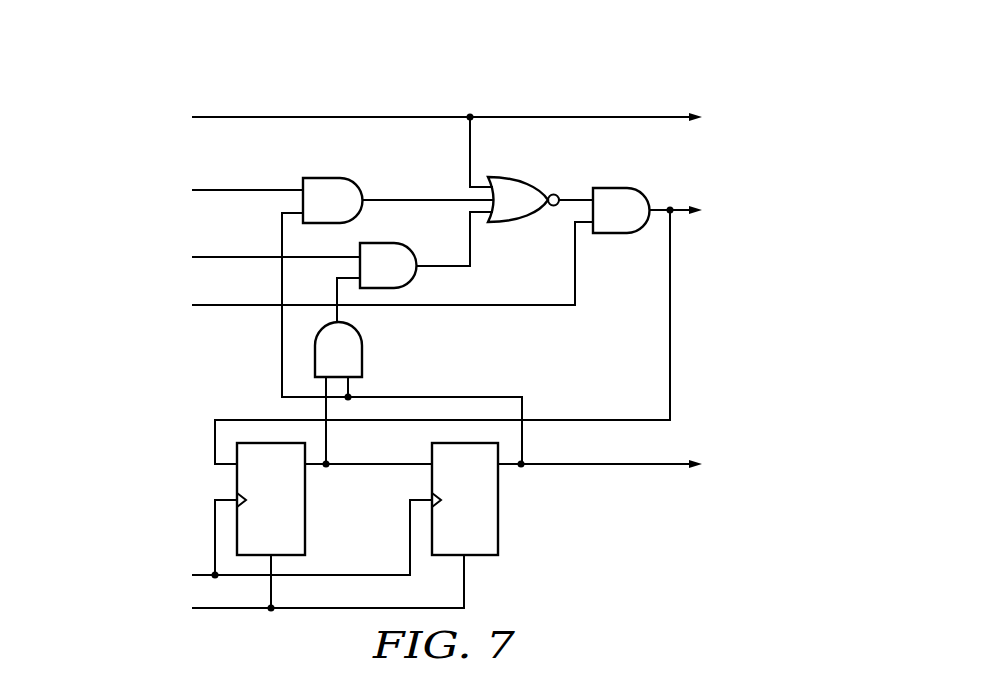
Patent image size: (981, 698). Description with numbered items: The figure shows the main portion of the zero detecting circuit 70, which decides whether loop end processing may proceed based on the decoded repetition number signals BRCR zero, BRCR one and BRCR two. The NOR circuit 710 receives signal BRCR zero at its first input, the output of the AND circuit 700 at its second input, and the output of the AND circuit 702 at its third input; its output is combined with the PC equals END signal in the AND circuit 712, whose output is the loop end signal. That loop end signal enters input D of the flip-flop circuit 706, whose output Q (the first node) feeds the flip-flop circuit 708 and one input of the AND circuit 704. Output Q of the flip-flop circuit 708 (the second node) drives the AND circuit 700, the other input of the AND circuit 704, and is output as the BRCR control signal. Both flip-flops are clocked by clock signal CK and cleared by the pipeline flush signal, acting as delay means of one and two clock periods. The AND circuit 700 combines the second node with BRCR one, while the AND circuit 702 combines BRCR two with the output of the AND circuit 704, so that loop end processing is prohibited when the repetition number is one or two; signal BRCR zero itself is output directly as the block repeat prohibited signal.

The zero detecting circuit 70 is at (617, 78).
The AND circuit 700 is at (333, 178).
The AND circuit 702 is at (410, 245).
The AND circuit 704 is at (362, 347).
The flip-flop circuit 706 is at (305, 508).
The flip-flop circuit 708 is at (498, 508).
The NOR circuit 710 is at (548, 160).
The AND circuit 712 is at (618, 188).